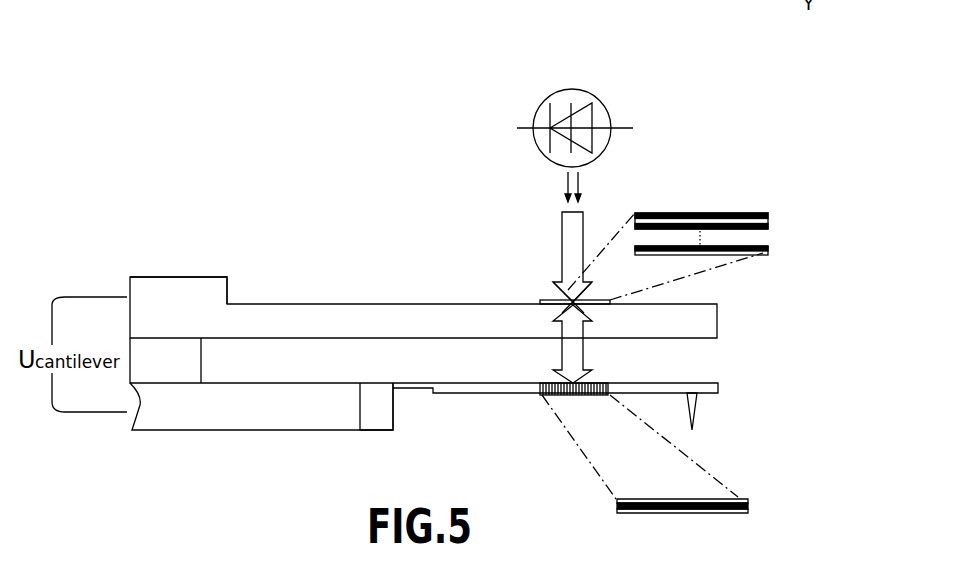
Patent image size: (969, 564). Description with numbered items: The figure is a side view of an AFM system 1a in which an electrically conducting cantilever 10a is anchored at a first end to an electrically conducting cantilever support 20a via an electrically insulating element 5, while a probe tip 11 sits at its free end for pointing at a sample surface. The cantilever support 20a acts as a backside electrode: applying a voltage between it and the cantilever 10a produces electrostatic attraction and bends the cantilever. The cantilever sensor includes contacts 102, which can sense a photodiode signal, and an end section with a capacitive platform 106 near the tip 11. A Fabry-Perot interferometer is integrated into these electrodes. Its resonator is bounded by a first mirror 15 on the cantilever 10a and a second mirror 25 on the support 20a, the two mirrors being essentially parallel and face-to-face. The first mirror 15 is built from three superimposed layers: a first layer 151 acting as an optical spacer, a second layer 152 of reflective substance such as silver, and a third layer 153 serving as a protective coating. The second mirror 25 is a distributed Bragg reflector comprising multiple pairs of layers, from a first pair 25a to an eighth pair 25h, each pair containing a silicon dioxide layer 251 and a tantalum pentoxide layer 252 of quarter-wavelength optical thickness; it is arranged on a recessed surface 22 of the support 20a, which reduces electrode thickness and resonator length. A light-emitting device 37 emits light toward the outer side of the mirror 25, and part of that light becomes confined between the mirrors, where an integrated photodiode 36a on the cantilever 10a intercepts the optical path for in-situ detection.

The AFM system 1a is at (152, 491).
The electrically insulating element 5 is at (192, 363).
The electrically conducting cantilever 10a is at (376, 431).
The probe tip 11 is at (693, 422).
The first mirror 15 is at (598, 395).
The cantilever support 20a is at (192, 277).
The recessed surface 22 is at (343, 303).
The second mirror 25 is at (540, 302).
The first pair of layers 25a is at (770, 260).
The eighth pair of layers 25h is at (768, 222).
The photodiode 36a is at (547, 382).
The light-emitting device 37 is at (572, 89).
The contacts 102 is at (238, 430).
The capacitive platform 106 is at (510, 393).
The first layer 151 is at (732, 498).
The second layer 152 is at (748, 507).
The third layer 153 is at (743, 513).
The SiO2 layer 251 is at (762, 256).
The Ta2O5 layer 252 is at (768, 250).